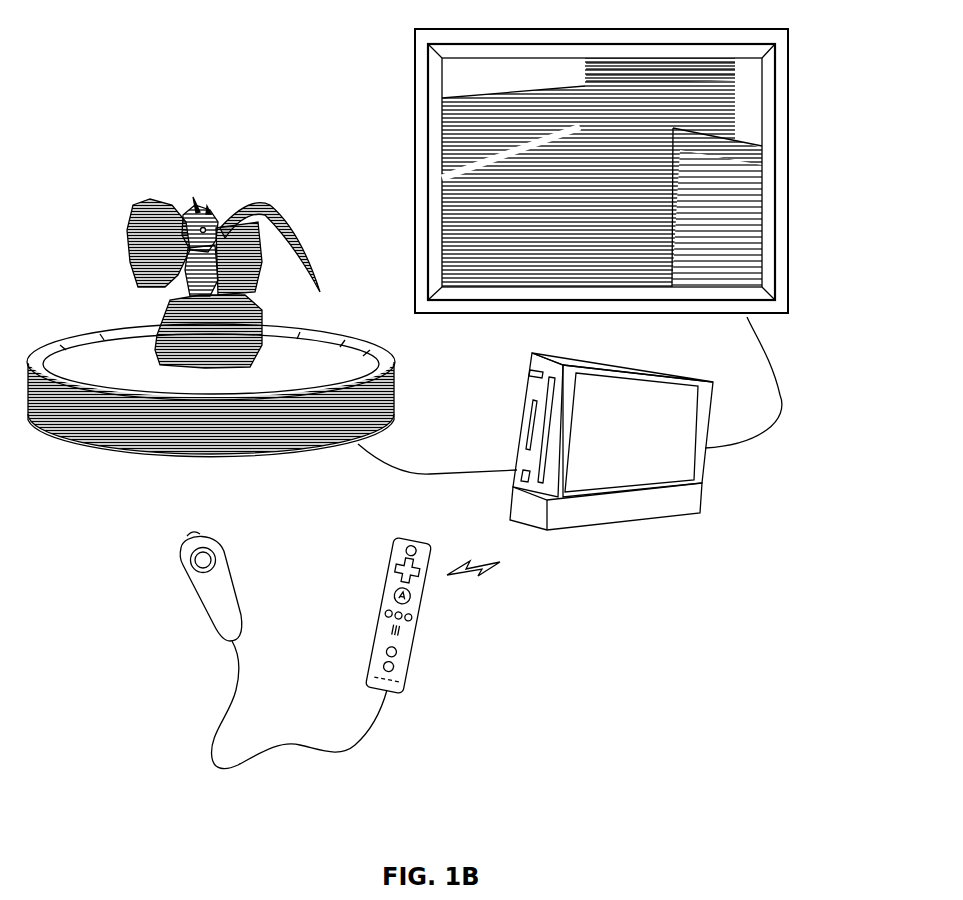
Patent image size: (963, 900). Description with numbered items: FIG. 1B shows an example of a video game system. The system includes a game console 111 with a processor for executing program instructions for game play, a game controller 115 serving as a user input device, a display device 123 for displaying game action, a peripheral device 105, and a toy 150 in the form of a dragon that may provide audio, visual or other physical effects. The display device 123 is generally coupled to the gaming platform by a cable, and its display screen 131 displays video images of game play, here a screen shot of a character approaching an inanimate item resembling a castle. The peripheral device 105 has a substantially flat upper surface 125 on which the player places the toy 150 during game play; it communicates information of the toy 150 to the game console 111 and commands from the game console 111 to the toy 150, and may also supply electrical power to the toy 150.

The peripheral device 105 is at (133, 452).
The game console 111 is at (692, 515).
The game controller 115 is at (415, 605).
The display device 123 is at (787, 300).
The substantially flat upper surface 125 is at (102, 360).
The display screen 131 is at (762, 148).
The toy 150 is at (143, 191).